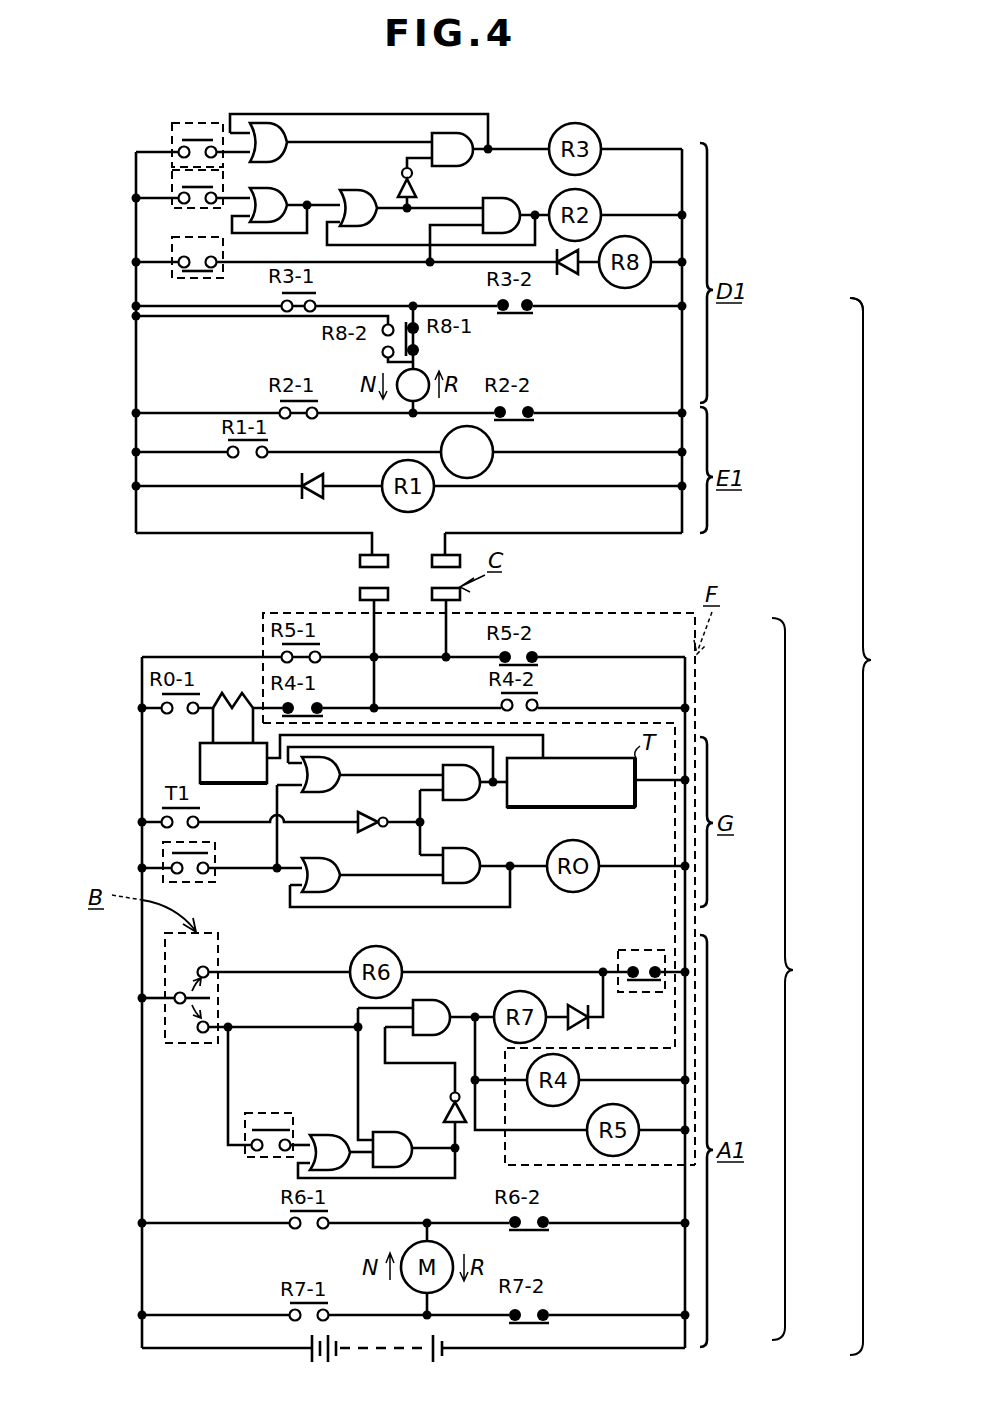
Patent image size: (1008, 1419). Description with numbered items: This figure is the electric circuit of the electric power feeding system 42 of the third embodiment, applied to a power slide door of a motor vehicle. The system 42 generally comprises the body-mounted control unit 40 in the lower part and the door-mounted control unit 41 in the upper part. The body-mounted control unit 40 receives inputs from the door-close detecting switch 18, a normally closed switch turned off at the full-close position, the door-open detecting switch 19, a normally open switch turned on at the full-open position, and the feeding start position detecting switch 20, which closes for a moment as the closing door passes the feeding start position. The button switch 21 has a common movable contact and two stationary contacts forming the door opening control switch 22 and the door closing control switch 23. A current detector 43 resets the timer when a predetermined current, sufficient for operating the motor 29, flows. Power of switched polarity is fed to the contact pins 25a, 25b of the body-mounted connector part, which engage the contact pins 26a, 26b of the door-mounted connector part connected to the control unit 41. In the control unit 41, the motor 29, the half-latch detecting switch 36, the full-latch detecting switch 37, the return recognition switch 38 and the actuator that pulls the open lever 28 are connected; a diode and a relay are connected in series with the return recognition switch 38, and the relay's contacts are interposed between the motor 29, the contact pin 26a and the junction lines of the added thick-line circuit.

The door-close detecting switch 18 is at (640, 950).
The door-open detecting switch 19 is at (262, 1113).
The feeding start position detecting switch 20 is at (163, 846).
The button switch 21 is at (181, 981).
The door opening control switch 22 is at (196, 1030).
The door closing control switch 23 is at (196, 970).
The contact pin 25a is at (360, 594).
The contact pin 25b is at (460, 594).
The contact pin 26a is at (360, 561).
The contact pin 26b is at (445, 550).
The open lever 28 is at (508, 446).
The motor 29 is at (405, 400).
The half-latch detecting switch 36 is at (172, 140).
The full-latch detecting switch 37 is at (172, 186).
The return recognition switch 38 is at (172, 243).
The body-mounted control unit 40 is at (800, 979).
The door-mounted control unit 41 is at (834, 349).
The electric power feeding system 42 is at (878, 826).
The current detector 43 is at (200, 757).